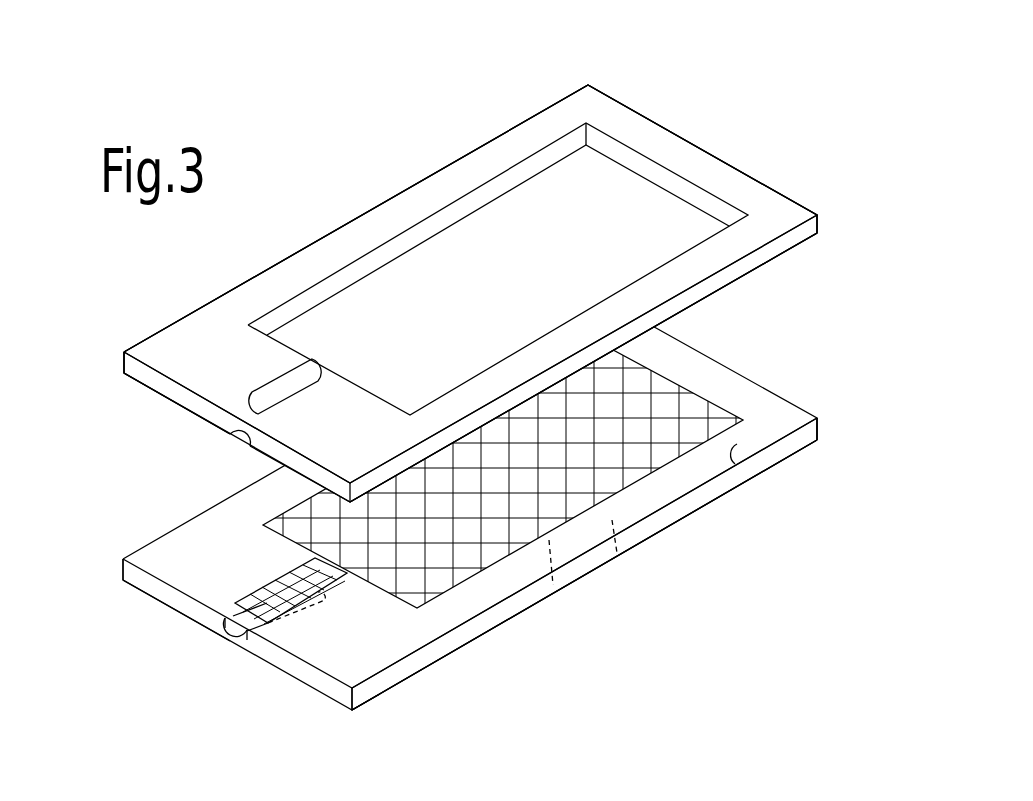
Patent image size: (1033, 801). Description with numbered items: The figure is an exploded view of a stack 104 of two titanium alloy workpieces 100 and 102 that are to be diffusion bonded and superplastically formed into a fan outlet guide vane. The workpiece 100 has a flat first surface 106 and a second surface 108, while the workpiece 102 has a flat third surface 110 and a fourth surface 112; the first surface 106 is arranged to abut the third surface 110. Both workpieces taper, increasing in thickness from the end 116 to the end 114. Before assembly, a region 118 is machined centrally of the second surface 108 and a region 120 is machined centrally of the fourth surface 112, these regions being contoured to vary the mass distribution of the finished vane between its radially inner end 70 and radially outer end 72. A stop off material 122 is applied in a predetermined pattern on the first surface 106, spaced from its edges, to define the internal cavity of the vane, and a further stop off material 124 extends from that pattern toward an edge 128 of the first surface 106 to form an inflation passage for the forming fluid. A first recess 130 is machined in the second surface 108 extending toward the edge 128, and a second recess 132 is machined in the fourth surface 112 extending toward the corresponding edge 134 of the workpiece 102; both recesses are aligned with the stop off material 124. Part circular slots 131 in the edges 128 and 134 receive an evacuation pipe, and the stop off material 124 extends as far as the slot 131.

The radially inner end 70 is at (793, 443).
The radially outer end 72 is at (422, 661).
The titanium alloy workpiece 100 is at (758, 407).
The titanium alloy workpiece 102 is at (775, 188).
The stack 104 is at (712, 112).
The first surface 106 is at (735, 464).
The second surface 108 is at (620, 552).
The third surface 110 is at (750, 237).
The fourth surface 112 is at (730, 183).
The end 114 is at (360, 697).
The end 116 is at (815, 431).
The region 118 is at (553, 587).
The region 120 is at (600, 193).
The stop off material 122 is at (643, 382).
The stop off material 124 is at (252, 592).
The edge 128 is at (152, 594).
The first recess 130 is at (290, 632).
The part circular slot 131 is at (240, 433).
The second recess 132 is at (298, 388).
The edge 134 is at (150, 383).